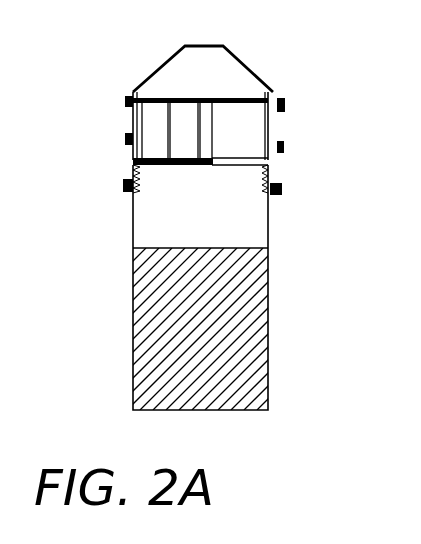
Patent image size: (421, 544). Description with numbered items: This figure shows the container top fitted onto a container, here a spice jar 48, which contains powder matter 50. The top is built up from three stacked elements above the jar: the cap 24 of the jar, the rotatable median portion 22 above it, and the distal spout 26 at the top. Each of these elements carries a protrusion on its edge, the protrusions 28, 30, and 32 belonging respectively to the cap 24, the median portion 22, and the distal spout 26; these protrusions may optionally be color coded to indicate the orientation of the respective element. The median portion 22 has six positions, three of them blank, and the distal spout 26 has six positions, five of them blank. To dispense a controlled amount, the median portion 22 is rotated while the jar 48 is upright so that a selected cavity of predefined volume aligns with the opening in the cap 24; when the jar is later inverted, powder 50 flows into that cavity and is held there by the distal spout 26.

The median portion 22 is at (131, 133).
The cap 24 is at (242, 167).
The distal spout 26 is at (240, 63).
The protrusion 28 is at (283, 190).
The protrusion 30 is at (284, 146).
The protrusion 32 is at (285, 102).
The spice jar 48 is at (269, 238).
The powder matter 50 is at (198, 248).